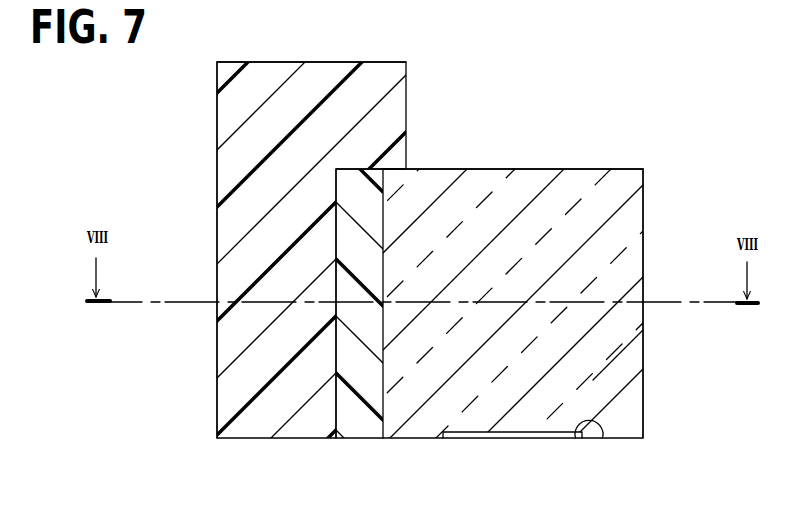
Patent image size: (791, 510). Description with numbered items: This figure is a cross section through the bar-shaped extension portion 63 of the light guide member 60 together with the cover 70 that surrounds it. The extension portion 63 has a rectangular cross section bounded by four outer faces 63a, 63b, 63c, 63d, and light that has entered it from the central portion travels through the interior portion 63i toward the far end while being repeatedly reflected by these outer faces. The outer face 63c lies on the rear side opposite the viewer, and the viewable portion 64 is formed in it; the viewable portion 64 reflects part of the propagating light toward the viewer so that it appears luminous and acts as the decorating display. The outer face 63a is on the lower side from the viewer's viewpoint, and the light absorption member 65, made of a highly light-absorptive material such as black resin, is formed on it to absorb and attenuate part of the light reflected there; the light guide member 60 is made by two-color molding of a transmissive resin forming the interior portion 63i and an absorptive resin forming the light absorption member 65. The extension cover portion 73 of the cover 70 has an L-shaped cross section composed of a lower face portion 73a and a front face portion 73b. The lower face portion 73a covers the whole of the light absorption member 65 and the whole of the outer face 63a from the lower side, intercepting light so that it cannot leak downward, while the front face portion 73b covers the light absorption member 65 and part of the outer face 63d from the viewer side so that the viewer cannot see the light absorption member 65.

The light guide member 60 is at (648, 200).
The extension portion 63 is at (620, 169).
The outer face 63a is at (385, 383).
The outer face 63b is at (643, 370).
The outer face 63c is at (507, 440).
The outer face 63d is at (530, 169).
The interior portion 63i is at (612, 342).
The viewable portion 64 is at (600, 438).
The light absorption member 65 is at (358, 362).
The cover 70 is at (212, 367).
The extension cover portion 73 is at (217, 333).
The lower face portion 73a is at (270, 230).
The front face portion 73b is at (372, 77).